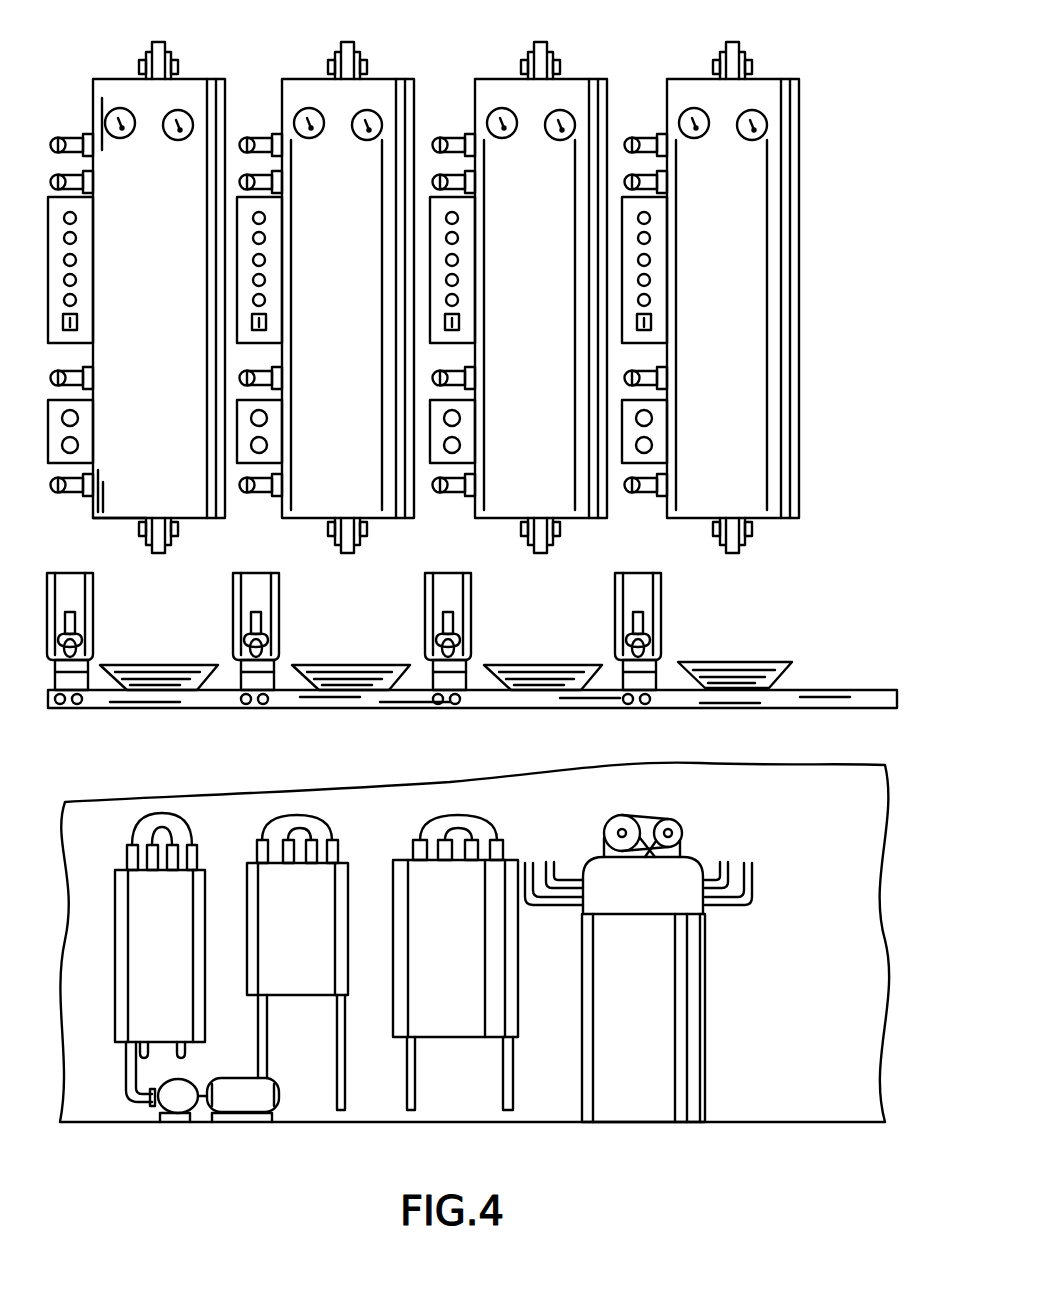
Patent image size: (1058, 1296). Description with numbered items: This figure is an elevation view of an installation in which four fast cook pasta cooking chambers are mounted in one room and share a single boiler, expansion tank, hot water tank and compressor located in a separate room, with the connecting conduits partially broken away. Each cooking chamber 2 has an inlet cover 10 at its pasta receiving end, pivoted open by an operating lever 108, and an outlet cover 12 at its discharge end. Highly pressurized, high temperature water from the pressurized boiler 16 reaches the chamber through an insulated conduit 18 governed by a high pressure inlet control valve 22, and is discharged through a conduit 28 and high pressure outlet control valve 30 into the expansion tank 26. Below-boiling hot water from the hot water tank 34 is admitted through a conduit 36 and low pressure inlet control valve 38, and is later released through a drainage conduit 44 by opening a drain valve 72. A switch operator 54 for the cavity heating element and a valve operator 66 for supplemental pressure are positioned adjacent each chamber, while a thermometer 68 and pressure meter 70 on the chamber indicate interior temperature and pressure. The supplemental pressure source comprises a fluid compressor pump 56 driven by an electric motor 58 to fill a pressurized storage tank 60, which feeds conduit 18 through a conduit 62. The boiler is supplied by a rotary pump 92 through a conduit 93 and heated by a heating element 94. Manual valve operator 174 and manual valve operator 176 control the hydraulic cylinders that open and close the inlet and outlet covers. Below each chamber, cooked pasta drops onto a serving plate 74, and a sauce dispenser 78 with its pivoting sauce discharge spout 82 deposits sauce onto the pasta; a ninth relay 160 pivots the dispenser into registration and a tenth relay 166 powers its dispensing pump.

The cooking chamber 2 is at (221, 520).
The inlet cover 10 is at (200, 78).
The outlet cover 12 is at (112, 520).
The pressurized boiler 16 is at (114, 931).
The conduit 18 is at (90, 184).
The high pressure inlet control valve 22 is at (77, 218).
The expansion tank 26 is at (257, 931).
The conduit 28 is at (70, 140).
The high pressure outlet control valve 30 is at (77, 238).
The hot water tank 34 is at (405, 931).
The conduit 36 is at (93, 377).
The low pressure inlet control valve 38 is at (77, 260).
The drainage conduit 44 is at (68, 493).
The switch operator 54 is at (78, 322).
The fluid compressor pump 56 is at (626, 815).
The electric motor 58 is at (676, 821).
The pressurized storage tank 60 is at (590, 931).
The conduit 62 is at (545, 862).
The valve operator 66 is at (77, 300).
The thermometer 68 is at (165, 119).
The pressure meter 70 is at (107, 117).
The drain valve 72 is at (77, 280).
The serving plate 74 is at (160, 668).
The sauce dispenser 78 is at (86, 598).
The sauce discharge spout 82 is at (82, 642).
The rotary pump 92 is at (178, 1115).
The conduit 93 is at (125, 1088).
The heating element 94 is at (185, 1052).
The operating lever 108 is at (574, 305).
The ninth relay 160 is at (58, 705).
The tenth relay 166 is at (80, 705).
The manual valve operator 174 is at (79, 418).
The manual valve operator 176 is at (79, 445).